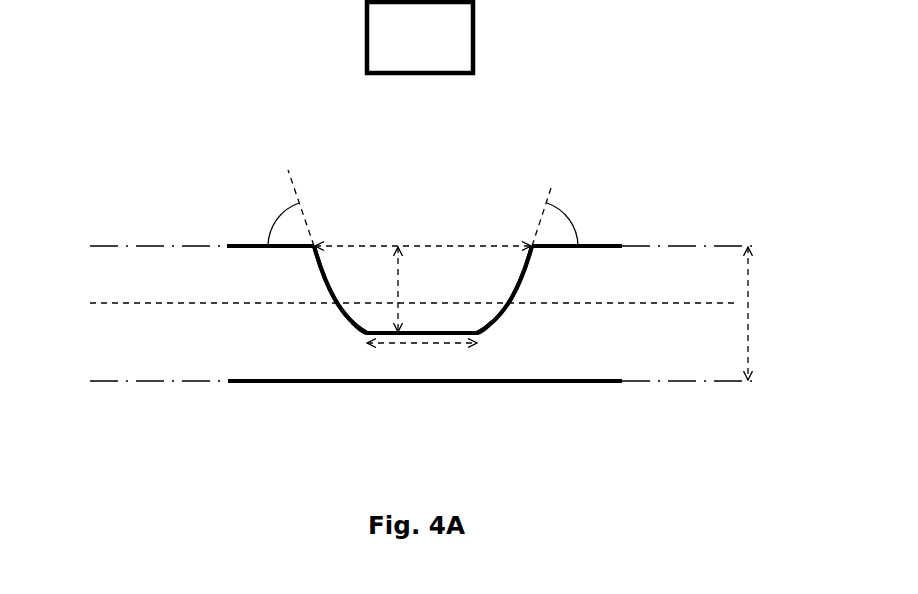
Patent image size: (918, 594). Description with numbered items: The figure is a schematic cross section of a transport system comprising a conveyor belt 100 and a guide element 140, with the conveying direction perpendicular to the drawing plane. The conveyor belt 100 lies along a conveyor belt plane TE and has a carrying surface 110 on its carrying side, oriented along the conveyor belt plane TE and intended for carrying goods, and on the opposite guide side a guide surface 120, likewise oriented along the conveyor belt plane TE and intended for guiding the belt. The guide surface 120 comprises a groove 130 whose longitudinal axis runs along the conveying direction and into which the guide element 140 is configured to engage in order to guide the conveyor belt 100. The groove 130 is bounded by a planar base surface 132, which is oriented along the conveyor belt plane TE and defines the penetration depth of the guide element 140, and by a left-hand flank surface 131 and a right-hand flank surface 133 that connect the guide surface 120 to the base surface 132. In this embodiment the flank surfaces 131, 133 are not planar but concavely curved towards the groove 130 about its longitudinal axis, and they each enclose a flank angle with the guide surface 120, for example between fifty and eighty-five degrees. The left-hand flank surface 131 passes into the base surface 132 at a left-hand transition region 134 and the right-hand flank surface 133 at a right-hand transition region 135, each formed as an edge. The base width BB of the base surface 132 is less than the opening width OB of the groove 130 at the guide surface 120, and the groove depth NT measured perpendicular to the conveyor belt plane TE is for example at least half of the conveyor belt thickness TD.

The conveyor belt 100 is at (408, 226).
The carrying surface 110 is at (385, 417).
The guide surface 120 is at (390, 209).
The groove 130 is at (420, 220).
The left-hand flank surface 131 is at (342, 278).
The base surface 132 is at (422, 233).
The right-hand flank surface 133 is at (497, 278).
The left-hand transition region 134 is at (244, 346).
The right-hand transition region 135 is at (597, 344).
The guide element 140 is at (445, 52).
The groove depth NT is at (312, 207).
The opening width OB is at (424, 160).
The base width BB is at (396, 405).
The conveyor belt plane TE is at (415, 230).
The conveyor belt thickness TD is at (787, 311).